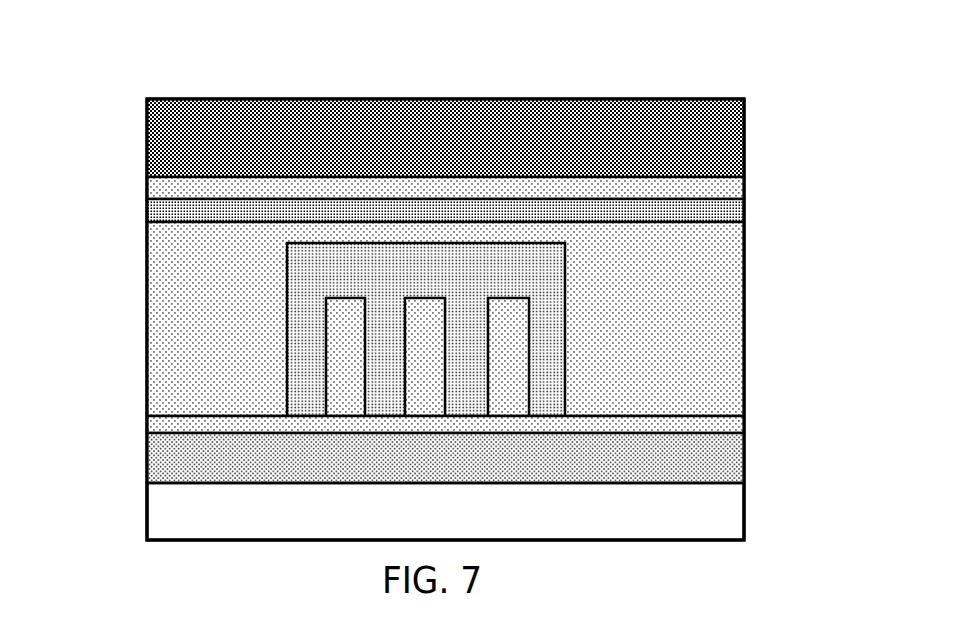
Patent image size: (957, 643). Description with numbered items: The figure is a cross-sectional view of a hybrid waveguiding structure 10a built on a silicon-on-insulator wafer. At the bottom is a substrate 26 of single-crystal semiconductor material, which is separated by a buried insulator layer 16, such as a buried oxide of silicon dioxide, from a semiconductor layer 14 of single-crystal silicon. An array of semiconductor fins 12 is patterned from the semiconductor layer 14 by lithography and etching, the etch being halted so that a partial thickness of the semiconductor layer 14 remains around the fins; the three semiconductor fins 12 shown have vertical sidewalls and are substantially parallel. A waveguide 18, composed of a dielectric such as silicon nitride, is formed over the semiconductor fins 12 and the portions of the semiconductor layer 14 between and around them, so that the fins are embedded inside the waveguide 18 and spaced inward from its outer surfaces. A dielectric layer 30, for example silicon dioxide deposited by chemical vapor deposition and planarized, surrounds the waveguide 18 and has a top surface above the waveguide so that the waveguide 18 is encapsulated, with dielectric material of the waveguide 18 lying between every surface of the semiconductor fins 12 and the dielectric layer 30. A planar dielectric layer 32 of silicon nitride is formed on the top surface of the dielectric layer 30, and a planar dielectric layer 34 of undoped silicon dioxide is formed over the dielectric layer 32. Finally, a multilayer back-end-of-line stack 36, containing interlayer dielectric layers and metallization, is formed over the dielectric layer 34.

The hybrid waveguiding structure 10a is at (125, 90).
The semiconductor fins 12 is at (337, 369).
The semiconductor layer 14 is at (163, 425).
The buried insulator layer 16 is at (727, 465).
The waveguide 18 is at (337, 275).
The substrate 26 is at (163, 518).
The dielectric layer 30 is at (713, 275).
The dielectric layer 32 is at (722, 215).
The dielectric layer 34 is at (160, 191).
The back-end-of-line stack 36 is at (723, 142).